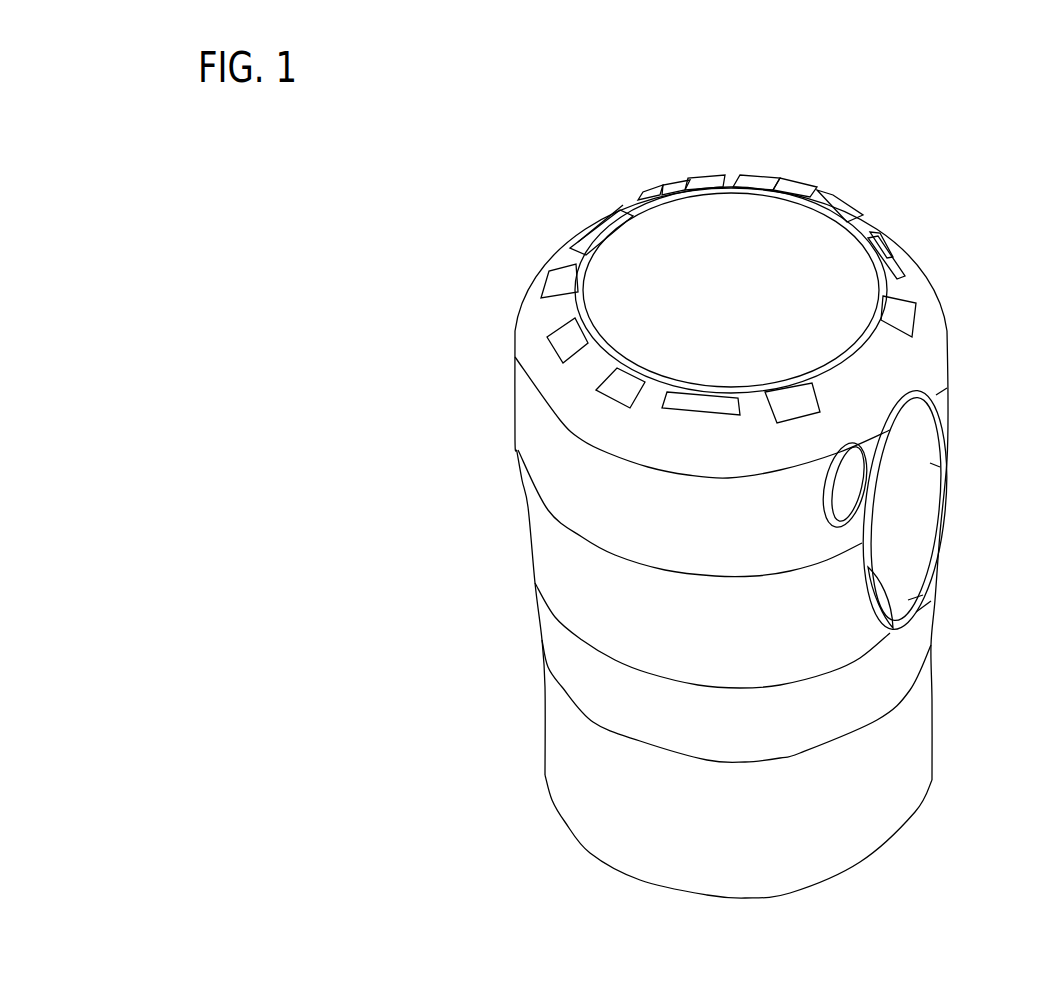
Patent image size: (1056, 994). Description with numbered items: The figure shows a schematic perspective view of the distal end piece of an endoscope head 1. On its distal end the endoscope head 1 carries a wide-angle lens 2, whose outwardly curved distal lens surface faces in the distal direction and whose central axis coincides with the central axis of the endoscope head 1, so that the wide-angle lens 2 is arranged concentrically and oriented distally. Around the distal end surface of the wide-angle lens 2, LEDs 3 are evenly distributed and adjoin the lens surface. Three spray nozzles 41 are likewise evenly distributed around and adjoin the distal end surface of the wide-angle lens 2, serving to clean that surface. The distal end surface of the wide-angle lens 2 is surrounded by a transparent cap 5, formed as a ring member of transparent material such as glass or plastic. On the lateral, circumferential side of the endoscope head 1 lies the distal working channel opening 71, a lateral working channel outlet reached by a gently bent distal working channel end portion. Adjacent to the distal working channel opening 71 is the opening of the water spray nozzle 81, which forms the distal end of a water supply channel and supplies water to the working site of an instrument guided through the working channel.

The endoscope head 1 is at (867, 797).
The wide-angle lens 2 is at (802, 252).
The LEDs 3 is at (578, 343).
The transparent cap 5 is at (937, 390).
The spray nozzle 41 is at (702, 405).
The distal working channel opening 71 is at (903, 527).
The water spray nozzle 81 is at (850, 470).